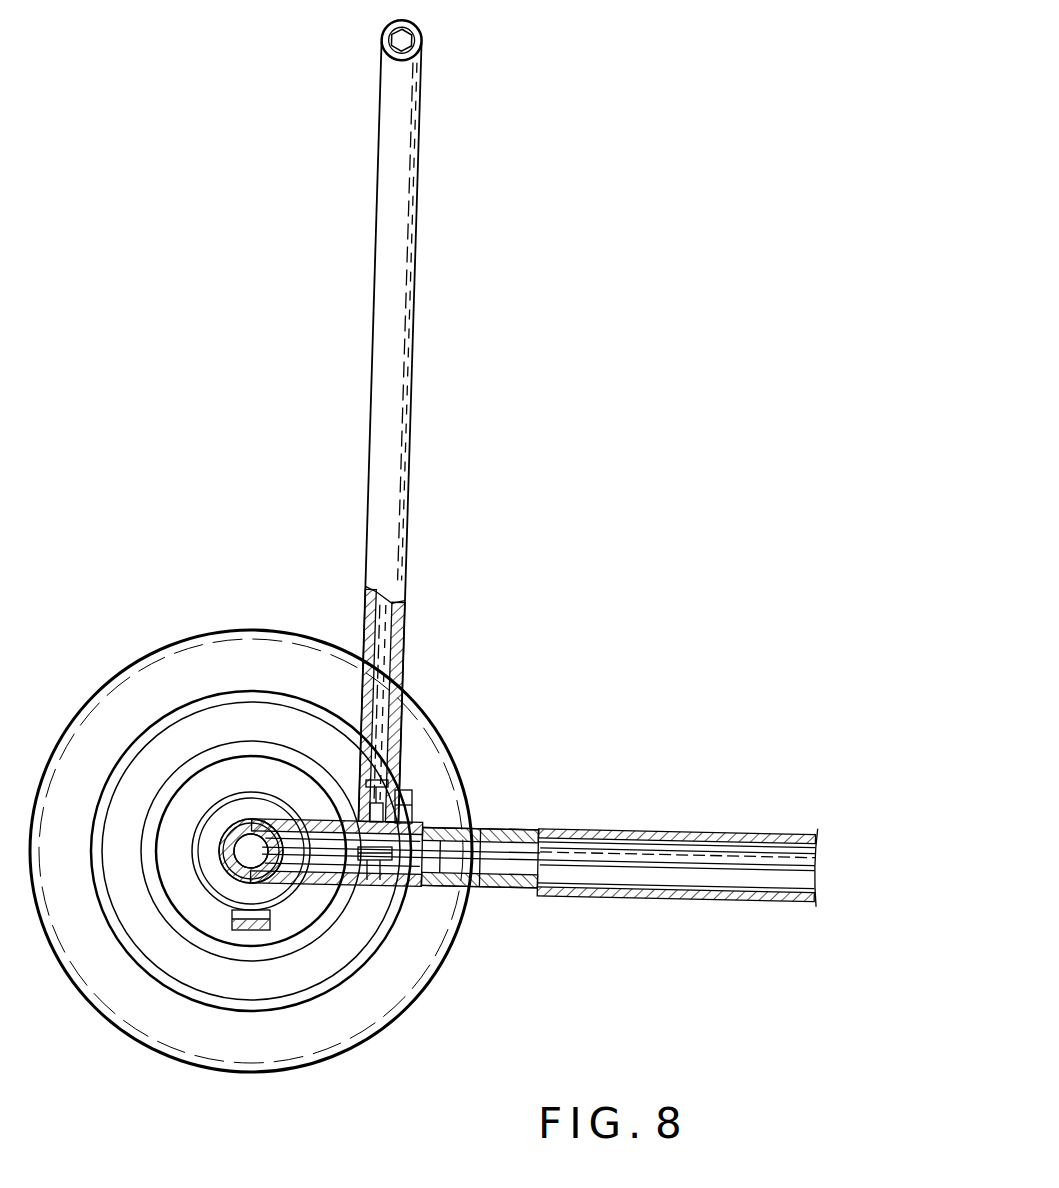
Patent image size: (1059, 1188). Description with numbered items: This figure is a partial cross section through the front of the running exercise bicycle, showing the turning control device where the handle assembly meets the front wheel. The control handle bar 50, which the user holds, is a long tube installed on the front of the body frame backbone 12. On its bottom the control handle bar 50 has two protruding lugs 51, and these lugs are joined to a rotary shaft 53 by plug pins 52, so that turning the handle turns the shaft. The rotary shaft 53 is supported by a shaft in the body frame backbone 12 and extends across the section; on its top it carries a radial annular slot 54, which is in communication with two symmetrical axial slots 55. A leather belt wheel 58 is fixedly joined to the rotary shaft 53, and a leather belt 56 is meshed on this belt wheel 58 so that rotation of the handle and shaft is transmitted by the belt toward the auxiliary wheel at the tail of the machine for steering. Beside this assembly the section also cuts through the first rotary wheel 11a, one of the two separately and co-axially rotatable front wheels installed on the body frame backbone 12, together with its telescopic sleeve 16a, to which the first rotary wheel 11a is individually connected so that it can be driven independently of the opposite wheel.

The first rotary wheel 11a is at (186, 641).
The telescopic sleeve 16a is at (282, 890).
The control handle bar 50 is at (404, 368).
The protruding lugs 51 is at (365, 800).
The plug pins 52 is at (358, 800).
The rotary shaft 53 is at (413, 893).
The radial annular slot 54 is at (400, 770).
The axial slots 55 is at (366, 790).
The leather belt 56 is at (672, 866).
The body frame backbone 12 is at (680, 897).
The leather belt wheel 58 is at (364, 886).